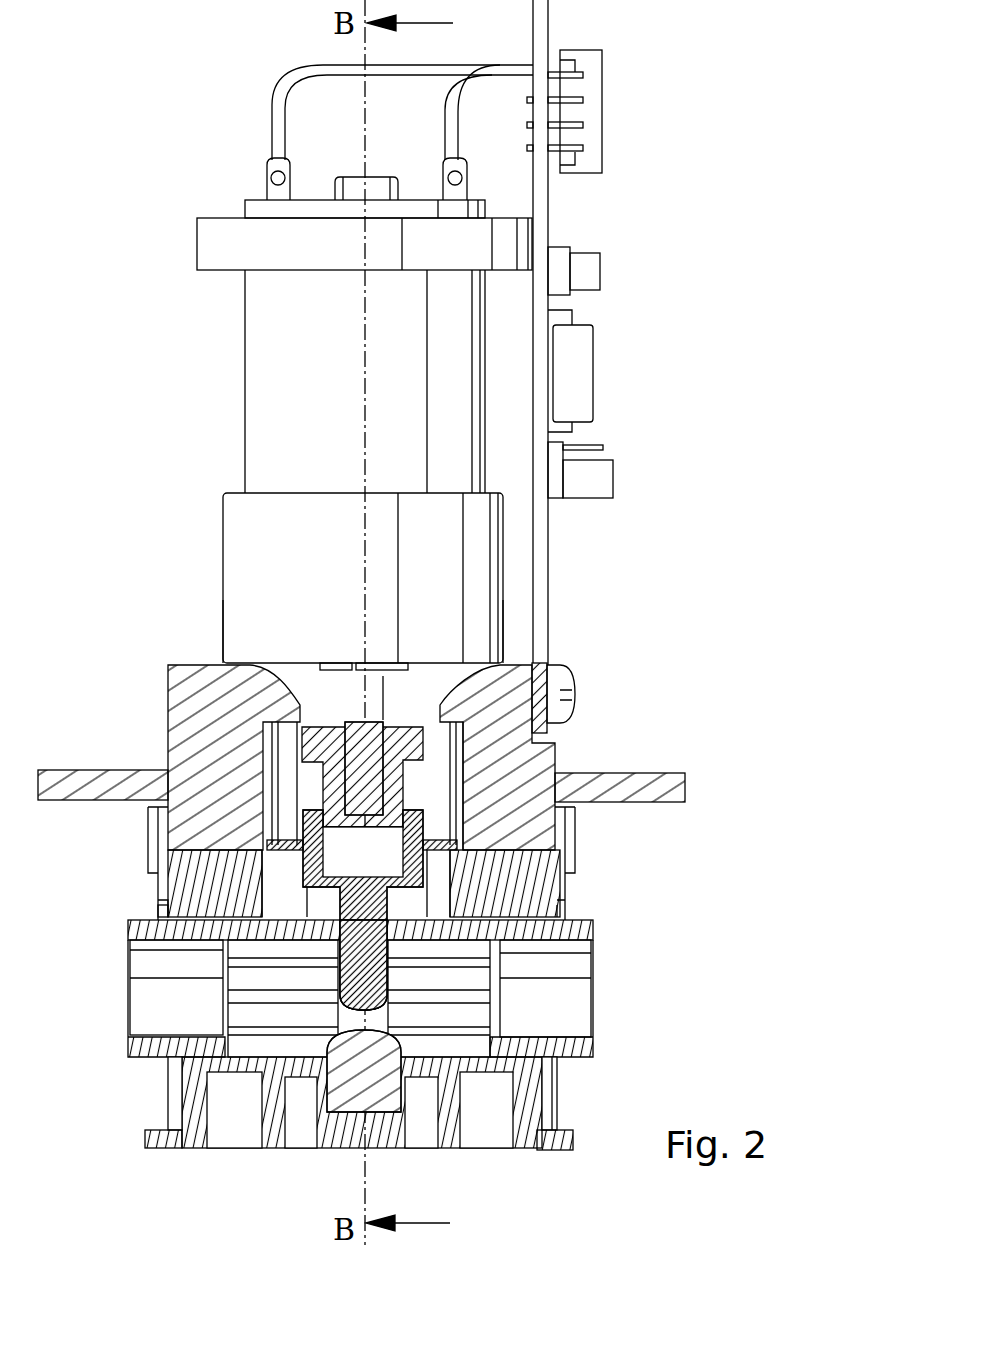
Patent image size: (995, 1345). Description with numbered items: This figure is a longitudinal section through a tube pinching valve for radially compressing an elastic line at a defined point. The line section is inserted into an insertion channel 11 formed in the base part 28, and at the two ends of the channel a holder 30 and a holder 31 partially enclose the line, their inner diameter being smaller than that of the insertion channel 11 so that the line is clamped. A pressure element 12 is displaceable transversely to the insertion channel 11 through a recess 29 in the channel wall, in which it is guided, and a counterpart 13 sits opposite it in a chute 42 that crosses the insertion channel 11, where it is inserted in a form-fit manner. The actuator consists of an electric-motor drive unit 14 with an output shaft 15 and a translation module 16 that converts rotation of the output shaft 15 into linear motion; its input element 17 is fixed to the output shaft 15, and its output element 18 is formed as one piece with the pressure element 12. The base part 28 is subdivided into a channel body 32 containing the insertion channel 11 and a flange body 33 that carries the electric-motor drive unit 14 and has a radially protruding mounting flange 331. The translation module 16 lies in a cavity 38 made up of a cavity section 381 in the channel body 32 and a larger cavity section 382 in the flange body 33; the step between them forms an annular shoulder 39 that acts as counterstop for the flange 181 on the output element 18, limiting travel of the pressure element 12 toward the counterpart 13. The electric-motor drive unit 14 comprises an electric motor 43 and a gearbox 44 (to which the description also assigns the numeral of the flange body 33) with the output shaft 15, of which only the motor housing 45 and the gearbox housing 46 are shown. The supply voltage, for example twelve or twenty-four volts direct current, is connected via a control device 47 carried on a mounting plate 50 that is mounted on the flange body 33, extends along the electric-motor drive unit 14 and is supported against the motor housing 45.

The insertion channel 11 is at (255, 1022).
The pressure element 12 is at (387, 978).
The counterpart 13 is at (350, 1097).
The electric-motor drive unit 14 is at (205, 492).
The output shaft 15 is at (352, 728).
The translation module 16 is at (428, 792).
The input element 17 is at (330, 770).
The output element 18 is at (423, 867).
The flange 181 is at (443, 838).
The base part 28 is at (118, 820).
The recess 29 is at (290, 928).
The holder 30 is at (580, 1037).
The holder 31 is at (150, 1033).
The channel body 32 is at (152, 898).
The flange body 33 is at (178, 672).
The mounting flange 331 is at (60, 786).
The cavity 38 is at (440, 818).
The cavity section 381 is at (433, 900).
The cavity section 382 is at (565, 690).
The annular shoulder 39 is at (160, 880).
The chute 42 is at (330, 1080).
The electric motor 43 is at (232, 349).
The motor stator housing 44 is at (212, 541).
The motor housing 45 is at (258, 425).
The gearbox housing 46 is at (258, 594).
The control device 47 is at (618, 353).
The mounting plate 50 is at (548, 578).